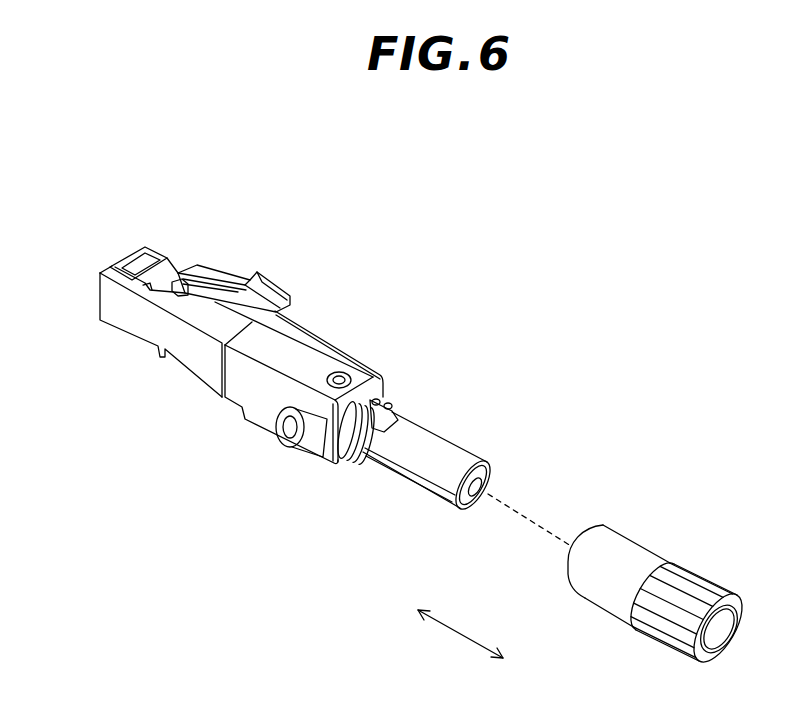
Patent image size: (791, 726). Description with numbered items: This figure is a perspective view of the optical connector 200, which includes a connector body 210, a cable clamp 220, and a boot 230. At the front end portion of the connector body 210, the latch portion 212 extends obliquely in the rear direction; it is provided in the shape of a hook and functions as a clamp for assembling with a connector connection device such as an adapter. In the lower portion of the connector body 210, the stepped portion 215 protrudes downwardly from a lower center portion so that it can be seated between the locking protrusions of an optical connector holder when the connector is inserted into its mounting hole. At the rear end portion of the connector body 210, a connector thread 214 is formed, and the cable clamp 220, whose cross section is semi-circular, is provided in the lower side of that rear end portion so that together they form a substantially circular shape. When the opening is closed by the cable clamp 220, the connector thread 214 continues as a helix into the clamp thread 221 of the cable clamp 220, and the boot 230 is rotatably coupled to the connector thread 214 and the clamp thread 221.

The optical connector 200 is at (367, 279).
The connector body 210 is at (135, 328).
The latch portion 212 is at (224, 272).
The connector thread 214 is at (393, 405).
The stepped portion 215 is at (262, 412).
The cable clamp 220 is at (312, 445).
The clamp thread 221 is at (355, 458).
The boot 230 is at (642, 543).